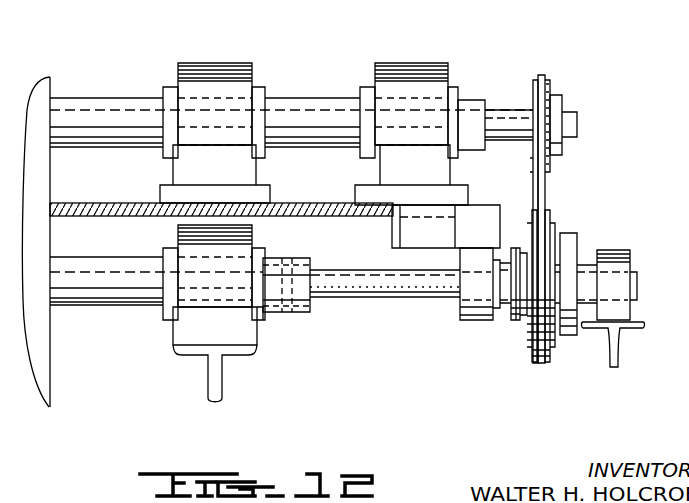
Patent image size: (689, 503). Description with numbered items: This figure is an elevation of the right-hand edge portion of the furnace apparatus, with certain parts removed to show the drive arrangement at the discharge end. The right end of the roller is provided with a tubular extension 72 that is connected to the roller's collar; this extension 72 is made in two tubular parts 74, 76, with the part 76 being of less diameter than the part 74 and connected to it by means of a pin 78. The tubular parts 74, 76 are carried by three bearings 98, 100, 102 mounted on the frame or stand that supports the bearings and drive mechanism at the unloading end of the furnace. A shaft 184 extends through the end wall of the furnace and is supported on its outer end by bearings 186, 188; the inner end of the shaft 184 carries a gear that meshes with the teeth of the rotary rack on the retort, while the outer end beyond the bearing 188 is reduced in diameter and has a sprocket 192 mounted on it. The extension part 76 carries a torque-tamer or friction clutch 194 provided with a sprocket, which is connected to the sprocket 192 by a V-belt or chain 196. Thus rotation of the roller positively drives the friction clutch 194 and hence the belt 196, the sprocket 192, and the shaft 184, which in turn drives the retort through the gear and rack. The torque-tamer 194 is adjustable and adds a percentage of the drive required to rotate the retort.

The tubular extension 72 is at (119, 318).
The tubular part 74 is at (147, 311).
The tubular part 76 is at (400, 286).
The pin 78 is at (304, 259).
The bearing 98 is at (178, 229).
The bearing 100 is at (477, 309).
The bearing 102 is at (622, 259).
The shaft 184 is at (132, 100).
The bearing 186 is at (210, 73).
The bearing 188 is at (410, 71).
The sprocket 192 is at (551, 86).
The friction clutch 194 is at (551, 215).
The V-belt or chain 196 is at (538, 183).